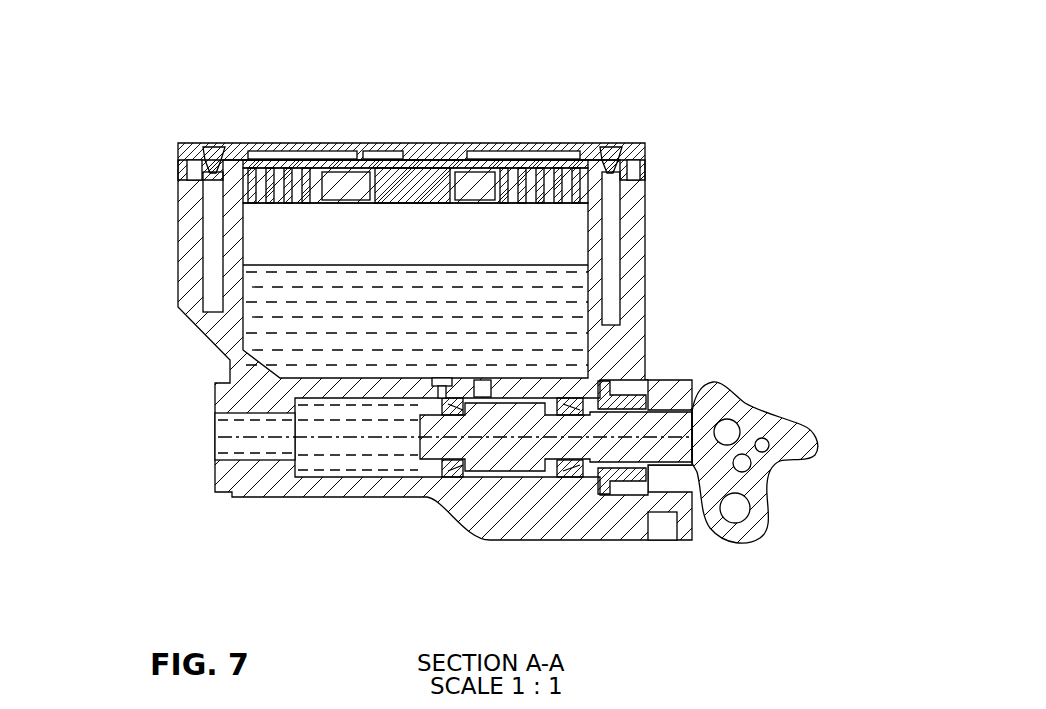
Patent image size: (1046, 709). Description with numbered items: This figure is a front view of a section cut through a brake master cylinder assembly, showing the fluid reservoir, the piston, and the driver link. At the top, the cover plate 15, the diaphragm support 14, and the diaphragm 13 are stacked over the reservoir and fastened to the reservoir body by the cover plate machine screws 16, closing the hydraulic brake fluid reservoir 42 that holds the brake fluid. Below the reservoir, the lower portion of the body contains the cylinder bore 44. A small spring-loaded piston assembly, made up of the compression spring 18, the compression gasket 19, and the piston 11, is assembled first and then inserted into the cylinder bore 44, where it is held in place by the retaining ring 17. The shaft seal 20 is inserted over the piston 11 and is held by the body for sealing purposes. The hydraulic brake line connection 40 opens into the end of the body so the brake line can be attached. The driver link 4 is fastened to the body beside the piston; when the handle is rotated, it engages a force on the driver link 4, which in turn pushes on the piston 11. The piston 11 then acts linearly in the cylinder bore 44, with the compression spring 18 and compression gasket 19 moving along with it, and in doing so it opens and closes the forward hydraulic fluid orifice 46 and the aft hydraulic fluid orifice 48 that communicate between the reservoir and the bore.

The driver link 4 is at (807, 405).
The piston 11 is at (689, 394).
The diaphragm 13 is at (311, 210).
The diaphragm support 14 is at (366, 141).
The cover plate 15 is at (474, 136).
The cover plate machine screw 16 is at (191, 140).
The retaining ring 17 is at (588, 501).
The compression spring 18 is at (412, 473).
The compression gasket 19 is at (552, 485).
The shaft seal 20 is at (661, 381).
The hydraulic brake line connection 40 is at (241, 442).
The hydraulic brake fluid reservoir 42 is at (302, 293).
The cylinder bore 44 is at (400, 483).
The forward hydraulic fluid orifice 46 is at (451, 382).
The aft hydraulic fluid orifice 48 is at (497, 382).